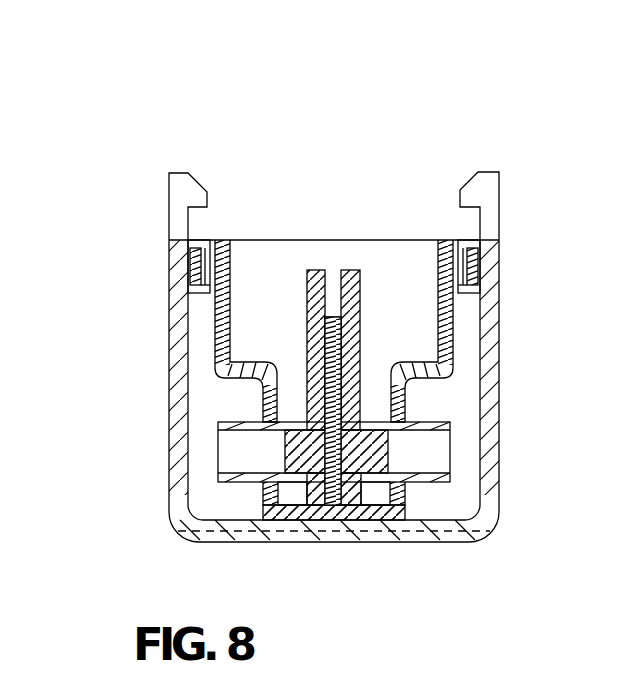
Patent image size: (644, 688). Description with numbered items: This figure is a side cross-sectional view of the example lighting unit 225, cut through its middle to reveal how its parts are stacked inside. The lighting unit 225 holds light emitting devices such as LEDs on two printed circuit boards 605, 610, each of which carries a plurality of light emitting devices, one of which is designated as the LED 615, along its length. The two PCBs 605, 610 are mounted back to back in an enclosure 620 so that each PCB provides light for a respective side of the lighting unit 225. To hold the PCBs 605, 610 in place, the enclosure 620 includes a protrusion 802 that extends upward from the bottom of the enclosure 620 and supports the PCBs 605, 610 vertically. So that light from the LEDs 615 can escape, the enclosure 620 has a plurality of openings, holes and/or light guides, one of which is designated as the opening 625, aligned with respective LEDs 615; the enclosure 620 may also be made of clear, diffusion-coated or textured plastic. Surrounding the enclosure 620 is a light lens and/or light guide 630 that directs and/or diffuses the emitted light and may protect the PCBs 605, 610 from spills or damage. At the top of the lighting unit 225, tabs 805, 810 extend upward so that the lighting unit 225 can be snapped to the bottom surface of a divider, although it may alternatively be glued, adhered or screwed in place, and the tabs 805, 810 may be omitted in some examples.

The lighting unit 225 is at (160, 137).
The tab 805 is at (198, 200).
The protrusion 802 is at (335, 318).
The printed circuit board 605 is at (311, 278).
The printed circuit board 610 is at (348, 278).
The tab 810 is at (469, 196).
The enclosure 620 is at (445, 362).
The light lens and/or light guide 630 is at (487, 418).
The opening, hole and/or light guide 625 is at (447, 461).
The light emitting device 615 is at (365, 465).